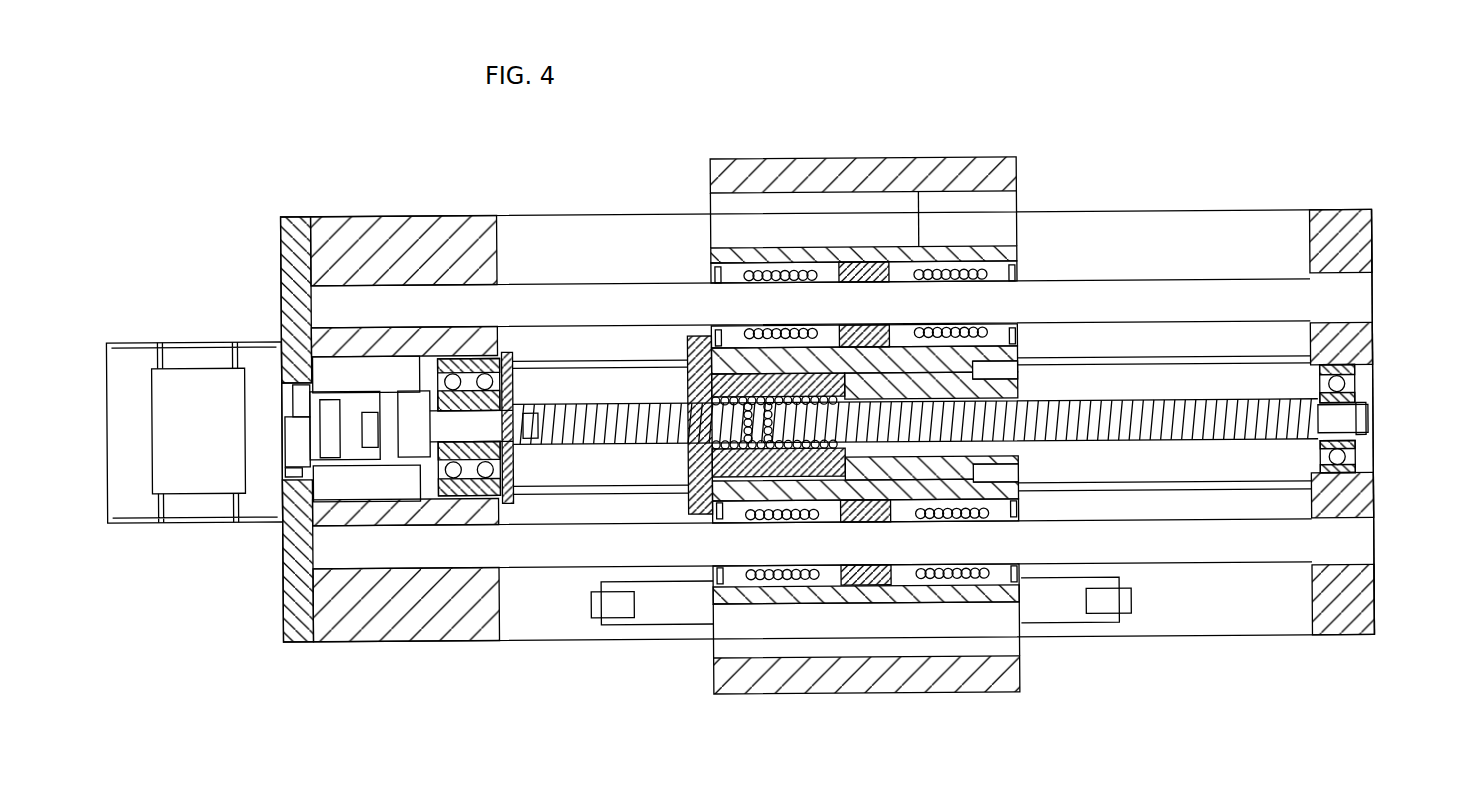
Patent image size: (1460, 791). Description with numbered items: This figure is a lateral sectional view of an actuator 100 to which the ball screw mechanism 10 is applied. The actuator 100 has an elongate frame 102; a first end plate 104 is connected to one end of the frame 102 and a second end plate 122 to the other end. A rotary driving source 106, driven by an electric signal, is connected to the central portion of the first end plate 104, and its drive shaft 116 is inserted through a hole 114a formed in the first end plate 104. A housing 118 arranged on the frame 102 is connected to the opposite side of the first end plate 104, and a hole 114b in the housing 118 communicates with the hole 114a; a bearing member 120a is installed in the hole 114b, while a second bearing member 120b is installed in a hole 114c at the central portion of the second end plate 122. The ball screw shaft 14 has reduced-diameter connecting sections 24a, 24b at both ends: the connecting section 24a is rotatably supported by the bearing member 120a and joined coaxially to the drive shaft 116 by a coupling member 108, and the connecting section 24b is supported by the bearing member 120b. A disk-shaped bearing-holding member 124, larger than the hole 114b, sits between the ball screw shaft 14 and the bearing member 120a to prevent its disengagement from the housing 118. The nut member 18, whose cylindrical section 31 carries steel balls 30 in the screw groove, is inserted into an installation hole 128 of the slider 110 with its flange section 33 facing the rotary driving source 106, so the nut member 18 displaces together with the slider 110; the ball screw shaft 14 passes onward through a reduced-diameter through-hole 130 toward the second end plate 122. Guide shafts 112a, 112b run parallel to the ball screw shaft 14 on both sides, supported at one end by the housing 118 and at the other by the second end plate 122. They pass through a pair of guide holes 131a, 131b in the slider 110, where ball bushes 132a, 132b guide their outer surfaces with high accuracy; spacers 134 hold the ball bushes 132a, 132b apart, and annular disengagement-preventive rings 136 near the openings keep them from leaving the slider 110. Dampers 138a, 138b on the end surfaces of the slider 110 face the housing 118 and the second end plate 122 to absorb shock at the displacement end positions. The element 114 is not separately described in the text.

The actuator 100 is at (1090, 106).
The frame 102 is at (1200, 605).
The first end plate 104 is at (297, 632).
The rotary driving source 106 is at (135, 503).
The coupling member 108 is at (356, 412).
The slider 110 is at (816, 678).
The guide shaft 112a is at (541, 549).
The guide shaft 112b is at (617, 303).
The end plate 114 is at (297, 429).
The hole 114a is at (297, 465).
The hole 114b is at (284, 345).
The hole 114c is at (1358, 464).
The drive shaft 116 is at (298, 430).
The housing 118 is at (360, 240).
The bearing member 120a is at (468, 490).
The bearing member 120b is at (1356, 392).
The second end plate 122 is at (1368, 243).
The bearing-holding member 124 is at (508, 360).
The installation hole 128 is at (851, 380).
The through-hole 130 is at (1018, 393).
The guide hole 131a is at (920, 196).
The guide hole 131b is at (745, 586).
The ball bush 132a is at (835, 590).
The ball bush 132b is at (821, 265).
The spacer 134 is at (880, 265).
The disengagement-preventive ring 136 is at (723, 266).
The damper 138a is at (612, 614).
The damper 138b is at (1064, 603).
The ball screw mechanism 10 is at (916, 404).
The ball screw shaft 14 is at (1190, 403).
The nut member 18 is at (686, 470).
The connecting section 24a is at (510, 449).
The connecting section 24b is at (1368, 428).
The steel balls 30 is at (760, 484).
The cylindrical section 31 is at (826, 504).
The flange section 33 is at (688, 347).